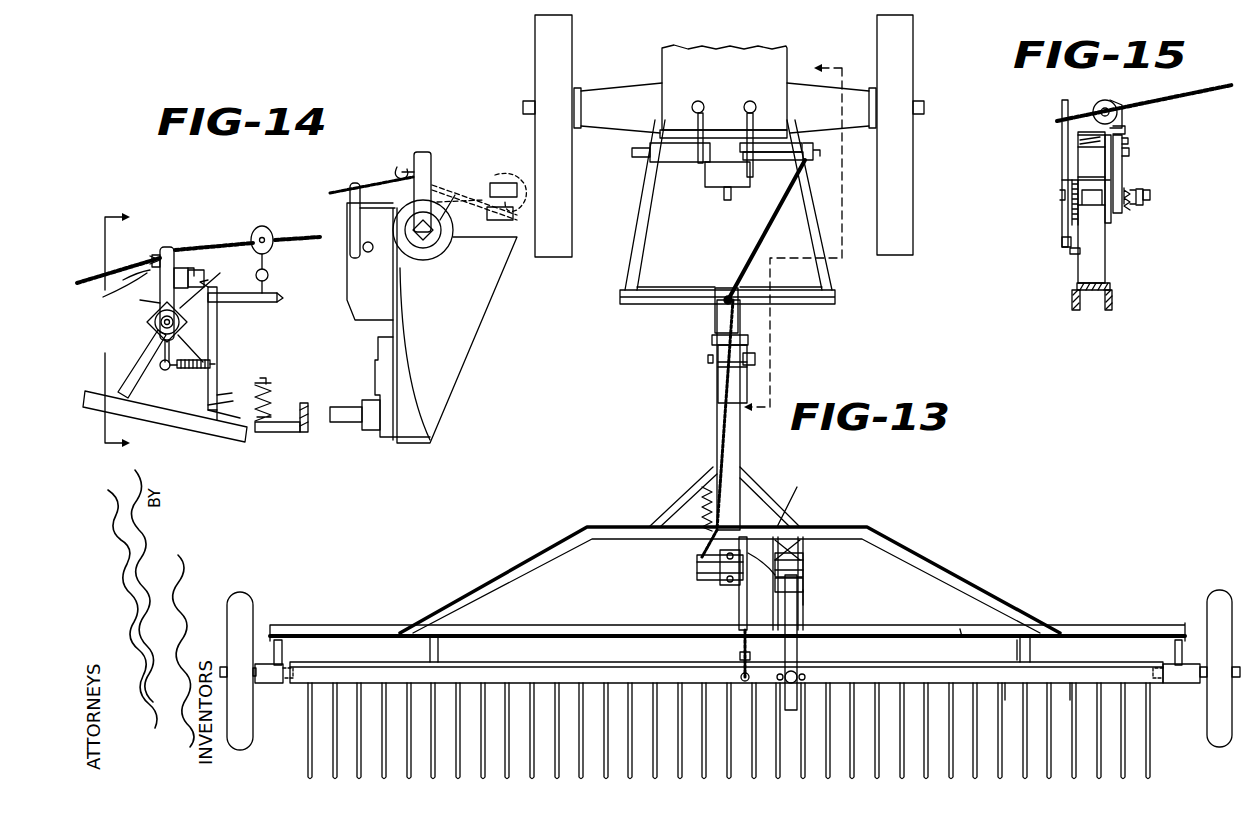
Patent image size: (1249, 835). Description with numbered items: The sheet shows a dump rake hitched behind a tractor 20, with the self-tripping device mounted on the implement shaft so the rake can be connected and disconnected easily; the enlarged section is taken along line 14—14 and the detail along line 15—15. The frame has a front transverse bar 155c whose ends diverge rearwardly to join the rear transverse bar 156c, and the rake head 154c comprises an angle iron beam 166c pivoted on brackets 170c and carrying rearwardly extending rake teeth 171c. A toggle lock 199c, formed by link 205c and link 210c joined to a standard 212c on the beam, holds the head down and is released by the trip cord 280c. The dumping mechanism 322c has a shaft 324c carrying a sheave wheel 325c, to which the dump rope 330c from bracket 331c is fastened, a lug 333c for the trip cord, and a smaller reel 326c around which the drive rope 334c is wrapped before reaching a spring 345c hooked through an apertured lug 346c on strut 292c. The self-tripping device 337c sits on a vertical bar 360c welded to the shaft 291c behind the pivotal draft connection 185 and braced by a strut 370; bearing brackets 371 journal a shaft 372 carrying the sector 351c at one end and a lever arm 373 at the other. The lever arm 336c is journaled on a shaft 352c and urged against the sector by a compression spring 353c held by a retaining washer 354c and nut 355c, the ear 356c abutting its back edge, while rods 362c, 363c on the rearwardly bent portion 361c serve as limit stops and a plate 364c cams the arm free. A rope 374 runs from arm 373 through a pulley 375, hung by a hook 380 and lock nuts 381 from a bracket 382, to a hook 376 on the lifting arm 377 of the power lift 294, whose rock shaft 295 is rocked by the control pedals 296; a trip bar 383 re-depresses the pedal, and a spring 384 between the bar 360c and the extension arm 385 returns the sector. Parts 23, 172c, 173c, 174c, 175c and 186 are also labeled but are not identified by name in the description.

In FIG. 13, the section line 14— 14 is at (793, 238).
In FIG. 14, the section line 15— 15 is at (115, 331).
In FIG. 13, the tractor 20 is at (690, 48).
In FIG. 14, the tractor 20 is at (480, 335).
In FIG. 13, the tractor rear wheel 23 is at (548, 49).
In FIG. 13, the rake head 154c is at (1158, 755).
In FIG. 13, the front transverse bar 155c is at (900, 556).
In FIG. 13, the rear transverse bar 156c is at (960, 633).
In FIG. 13, the angle iron beam 166c is at (940, 668).
In FIG. 13, the brackets 170c is at (432, 650).
In FIG. 13, the rake teeth 171c is at (1072, 695).
In FIG. 13, the axle bracket 172c is at (298, 668).
In FIG. 13, the hub 173c is at (268, 688).
In FIG. 13, the gauge wheel 174c is at (240, 605).
In FIG. 13, the wheel hanger 175c is at (278, 650).
In FIG. 13, the pivotal draft connection 185 is at (714, 304).
In FIG. 14, the pivotal draft connection 185 is at (269, 386).
In FIG. 13, the drawbar 186 is at (630, 306).
In FIG. 14, the drawbar 186 is at (292, 434).
In FIG. 13, the toggle lock 199c is at (807, 600).
In FIG. 13, the link 205c is at (806, 565).
In FIG. 13, the link 210c is at (800, 659).
In FIG. 13, the standard 212c is at (805, 677).
In FIG. 13, the trip cord 280c is at (806, 583).
In FIG. 13, the shaft 291c is at (717, 418).
In FIG. 14, the shaft 291c is at (185, 427).
In FIG. 15, the shaft 291c is at (1075, 300).
In FIG. 13, the strut 292c is at (752, 478).
In FIG. 13, the power lift mechanism 294 is at (725, 165).
In FIG. 14, the power lift mechanism 294 is at (425, 258).
In FIG. 13, the rock shaft 295 is at (640, 152).
In FIG. 14, the rock shaft 295 is at (412, 238).
In FIG. 13, the control pedals 296 is at (750, 101).
In FIG. 14, the control pedals 296 is at (500, 184).
In FIG. 13, the dumping mechanism 322c is at (691, 580).
In FIG. 13, the shaft 324c is at (737, 596).
In FIG. 13, the sheave wheel 325c is at (777, 535).
In FIG. 13, the spool-shaped reel 326c is at (724, 588).
In FIG. 13, the dump rope 330c is at (742, 655).
In FIG. 13, the bracket 331c is at (741, 678).
In FIG. 13, the lug 333c is at (790, 540).
In FIG. 13, the rope 334c is at (722, 450).
In FIG. 14, the rope 334c is at (128, 272).
In FIG. 14, the lever arm 336c is at (165, 250).
In FIG. 15, the lever arm 336c is at (1120, 170).
In FIG. 13, the self-tripping device 337c is at (712, 365).
In FIG. 14, the self-tripping device 337c is at (140, 323).
In FIG. 13, the spring 345c is at (703, 512).
In FIG. 13, the apertured lug 346c is at (703, 490).
In FIG. 14, the sector 351c is at (145, 302).
In FIG. 15, the sector 351c is at (1114, 185).
In FIG. 15, the shaft 352c is at (1127, 208).
In FIG. 15, the compression spring 353c is at (1133, 203).
In FIG. 15, the retaining washer 354c is at (1140, 200).
In FIG. 15, the nut 355c is at (1150, 198).
In FIG. 14, the ear 356c is at (125, 293).
In FIG. 14, the vertical bar 360c is at (212, 390).
In FIG. 14, the rearwardly bent portion 361c is at (180, 262).
In FIG. 15, the rearwardly bent portion 361c is at (1085, 144).
In FIG. 14, the rod 362c is at (158, 258).
In FIG. 15, the rod 362c is at (1125, 133).
In FIG. 14, the rod 363c is at (200, 260).
In FIG. 15, the rod 363c is at (1127, 143).
In FIG. 14, the plate 364c is at (205, 272).
In FIG. 15, the plate 364c is at (1128, 153).
In FIG. 14, the strut 370 is at (128, 372).
In FIG. 15, the strut 370 is at (1090, 270).
In FIG. 14, the bearing brackets 371 is at (166, 335).
In FIG. 15, the bearing brackets 371 is at (1100, 190).
In FIG. 14, the shaft 372 is at (183, 351).
In FIG. 15, the shaft 372 is at (1062, 242).
In FIG. 14, the lever arm 373 is at (172, 250).
In FIG. 15, the lever arm 373 is at (1065, 168).
In FIG. 13, the rope 374 is at (756, 242).
In FIG. 14, the rope 374 is at (298, 240).
In FIG. 15, the rope 374 is at (1081, 118).
In FIG. 13, the pulley 375 is at (738, 302).
In FIG. 14, the pulley 375 is at (262, 226).
In FIG. 15, the pulley 375 is at (1114, 105).
In FIG. 14, the hook 376 is at (398, 167).
In FIG. 13, the lifting arm 377 is at (813, 154).
In FIG. 14, the lifting arm 377 is at (425, 153).
In FIG. 14, the hook 380 is at (268, 276).
In FIG. 14, the lock nuts 381 is at (278, 297).
In FIG. 14, the bracket 382 is at (244, 318).
In FIG. 13, the trip bar 383 is at (770, 143).
In FIG. 14, the trip bar 383 is at (432, 172).
In FIG. 14, the spring 384 is at (182, 370).
In FIG. 15, the spring 384 is at (1075, 252).
In FIG. 15, the extension arm 385 is at (1072, 225).